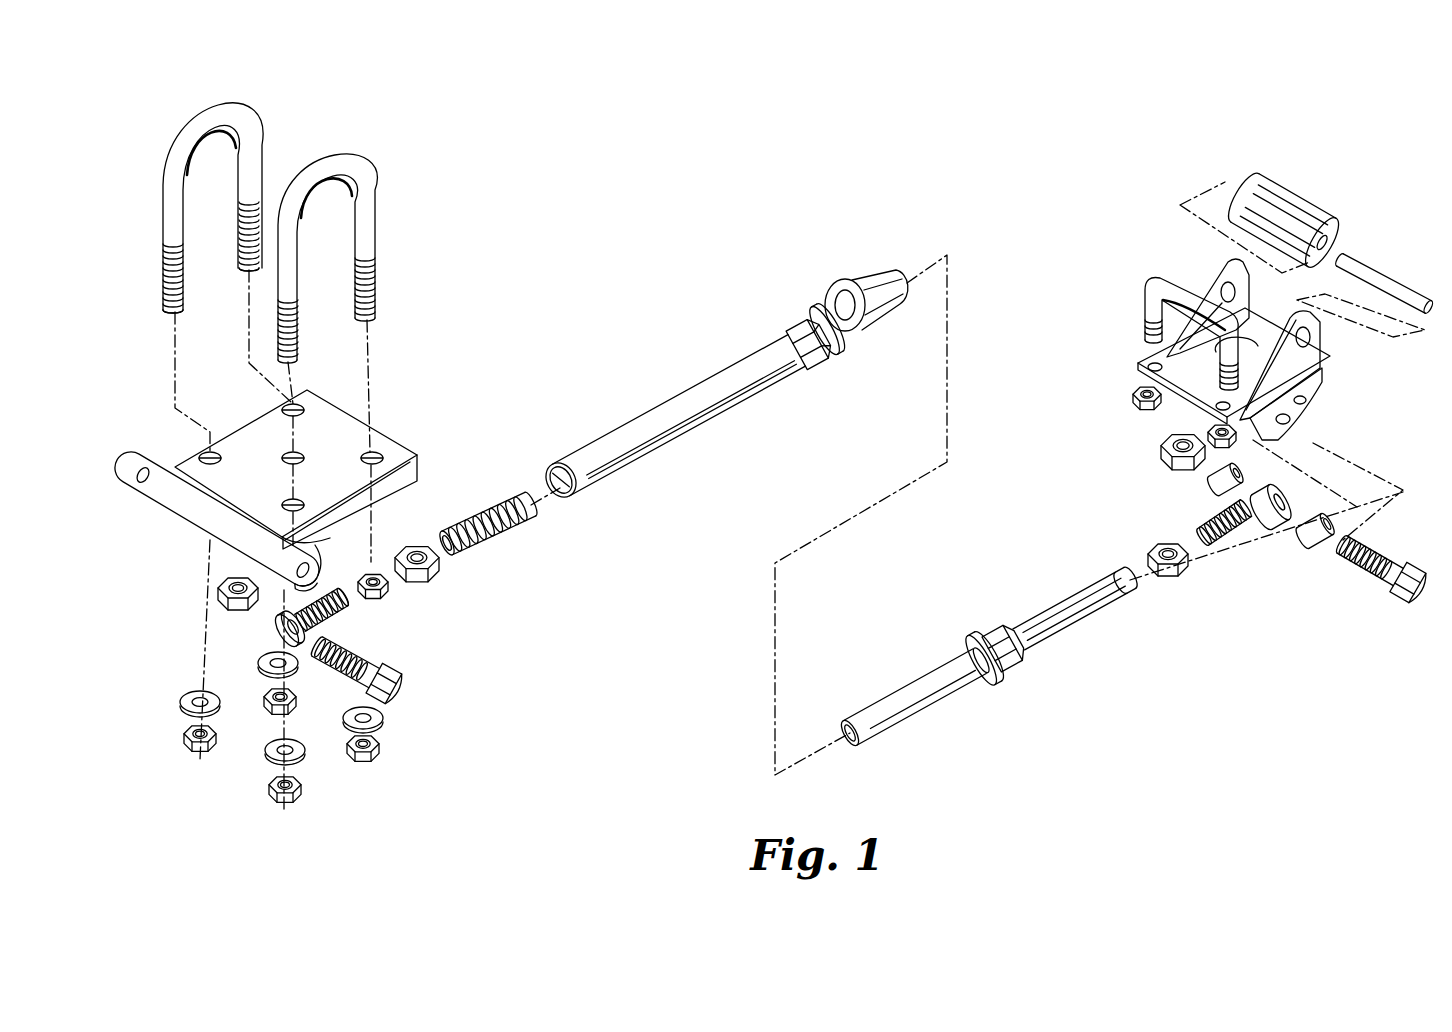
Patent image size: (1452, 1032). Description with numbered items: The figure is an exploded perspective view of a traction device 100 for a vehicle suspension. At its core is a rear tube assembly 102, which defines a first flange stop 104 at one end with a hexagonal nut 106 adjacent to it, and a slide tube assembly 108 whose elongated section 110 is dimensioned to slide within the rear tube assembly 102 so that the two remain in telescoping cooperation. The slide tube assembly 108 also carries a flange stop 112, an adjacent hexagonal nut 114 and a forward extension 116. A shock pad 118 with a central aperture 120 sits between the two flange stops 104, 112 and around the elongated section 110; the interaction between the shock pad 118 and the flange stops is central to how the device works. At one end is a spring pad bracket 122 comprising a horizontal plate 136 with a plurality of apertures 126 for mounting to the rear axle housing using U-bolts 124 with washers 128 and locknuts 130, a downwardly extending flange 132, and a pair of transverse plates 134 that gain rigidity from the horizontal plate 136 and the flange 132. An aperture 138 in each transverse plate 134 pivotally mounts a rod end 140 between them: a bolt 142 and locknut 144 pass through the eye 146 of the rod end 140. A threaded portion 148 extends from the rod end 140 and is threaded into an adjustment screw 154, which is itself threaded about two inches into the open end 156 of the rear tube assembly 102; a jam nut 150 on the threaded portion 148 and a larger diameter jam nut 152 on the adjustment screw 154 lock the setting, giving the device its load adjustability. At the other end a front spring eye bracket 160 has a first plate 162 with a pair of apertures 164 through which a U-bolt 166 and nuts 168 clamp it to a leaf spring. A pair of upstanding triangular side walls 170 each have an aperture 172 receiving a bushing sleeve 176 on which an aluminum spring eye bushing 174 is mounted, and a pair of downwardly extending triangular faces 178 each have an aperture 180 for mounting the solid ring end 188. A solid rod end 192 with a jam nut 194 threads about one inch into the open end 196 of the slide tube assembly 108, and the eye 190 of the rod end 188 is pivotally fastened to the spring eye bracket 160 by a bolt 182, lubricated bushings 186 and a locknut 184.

The traction device 100 is at (700, 271).
The rear tube assembly 102 is at (697, 409).
The first flange stop 104 is at (799, 313).
The hexagonal nut 106 is at (778, 324).
The slide tube assembly 108 is at (903, 677).
The elongated section 110 is at (927, 697).
The flange stop 112 is at (967, 633).
The hexagonal nut 114 is at (1017, 673).
The forward extension 116 is at (1080, 610).
The shock pad 118 is at (852, 280).
The central aperture 120 is at (853, 333).
The spring pad bracket 122 is at (352, 382).
The U-bolts 124 is at (257, 123).
The apertures 126 is at (282, 503).
The washers 128 is at (258, 665).
The locknuts 130 is at (260, 707).
The downwardly extending flange 132 is at (158, 493).
The transverse plates 134 is at (367, 493).
The horizontal plate 136 is at (316, 417).
The aperture 138 is at (322, 542).
The rod end 140 is at (263, 622).
The bolt 142 is at (405, 690).
The locknut 144 is at (218, 585).
The eye 146 is at (313, 630).
The threaded portion 148 is at (330, 622).
The jam nut 150 is at (393, 603).
The larger diameter jam nut 152 is at (432, 577).
The adjustment screw 154 is at (520, 528).
The open end 156 is at (548, 482).
The front spring eye bracket 160 is at (1167, 257).
The first plate 162 is at (1138, 366).
The apertures 164 is at (1155, 363).
The U-bolt 166 is at (1147, 283).
The nuts 168 is at (1130, 397).
The upstanding triangular side walls 170 is at (1242, 305).
The aperture 172 is at (1223, 265).
The spring eye bushing 174 is at (1303, 193).
The bushing sleeve 176 is at (1387, 260).
The downwardly extending triangular faces 178 is at (1293, 400).
The aperture 180 is at (1290, 422).
The bolt 182 is at (1380, 582).
The locknut 184 is at (1167, 466).
The bushings 186 is at (1323, 548).
The solid ring end 188 is at (1277, 533).
The eye 190 is at (1403, 492).
The solid rod end 192 is at (1197, 523).
The jam nut 194 is at (1180, 575).
The open end 196 is at (1143, 577).